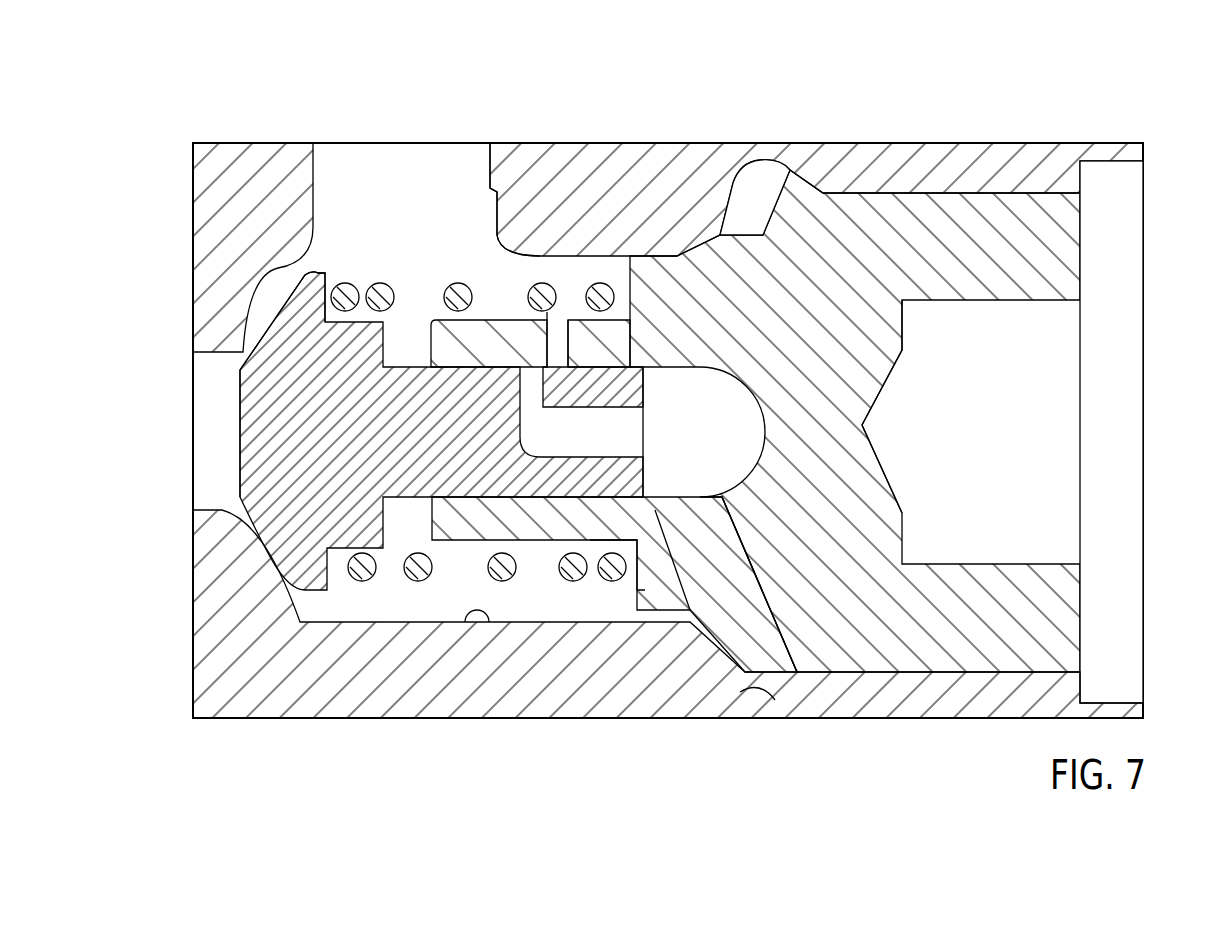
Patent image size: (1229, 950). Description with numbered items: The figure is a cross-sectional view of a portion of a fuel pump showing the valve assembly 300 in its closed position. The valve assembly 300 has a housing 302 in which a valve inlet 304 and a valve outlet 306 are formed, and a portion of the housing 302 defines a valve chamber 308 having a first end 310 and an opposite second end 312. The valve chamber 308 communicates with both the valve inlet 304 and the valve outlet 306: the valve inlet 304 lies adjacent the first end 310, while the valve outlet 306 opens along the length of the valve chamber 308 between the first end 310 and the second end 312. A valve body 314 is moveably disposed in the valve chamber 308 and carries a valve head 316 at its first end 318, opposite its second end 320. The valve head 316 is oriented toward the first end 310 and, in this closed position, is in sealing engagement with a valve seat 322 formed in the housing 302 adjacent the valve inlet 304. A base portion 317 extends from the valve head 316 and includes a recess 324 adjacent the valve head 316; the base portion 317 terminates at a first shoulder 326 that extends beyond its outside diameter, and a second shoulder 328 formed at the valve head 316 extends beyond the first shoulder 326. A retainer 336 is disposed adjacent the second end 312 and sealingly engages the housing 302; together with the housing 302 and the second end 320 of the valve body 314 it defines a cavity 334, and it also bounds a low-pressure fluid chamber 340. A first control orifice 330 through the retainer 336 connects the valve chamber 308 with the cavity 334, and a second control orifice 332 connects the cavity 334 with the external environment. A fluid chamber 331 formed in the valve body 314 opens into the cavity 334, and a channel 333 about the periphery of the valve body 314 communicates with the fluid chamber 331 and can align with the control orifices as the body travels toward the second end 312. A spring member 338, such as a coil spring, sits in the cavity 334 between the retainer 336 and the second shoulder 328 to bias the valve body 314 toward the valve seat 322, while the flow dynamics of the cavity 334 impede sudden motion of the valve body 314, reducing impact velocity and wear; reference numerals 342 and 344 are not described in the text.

The valve assembly 300 is at (218, 76).
The housing 302 is at (664, 143).
The valve inlet 304 is at (240, 355).
The valve outlet 306 is at (490, 188).
The valve chamber 308 is at (477, 625).
The first end 310 is at (217, 420).
The second end 312 is at (890, 372).
The valve body 314 is at (503, 475).
The valve head 316 is at (302, 278).
The base portion 317 is at (625, 530).
The first end 318 is at (238, 465).
The second end 320 is at (648, 420).
The valve seat 322 is at (265, 568).
The recess 324 is at (420, 362).
The first shoulder 326 is at (412, 582).
The second shoulder 328 is at (350, 582).
The first control orifice 330 is at (585, 320).
The fluid chamber 331 is at (635, 440).
The second control orifice 332 is at (705, 560).
The channel 333 is at (530, 366).
The cavity 334 is at (760, 420).
The retainer 336 is at (958, 230).
The spring member 338 is at (349, 283).
The fluid chamber 340 is at (1068, 320).
The body edge 342 is at (792, 700).
The fillet 344 is at (770, 700).